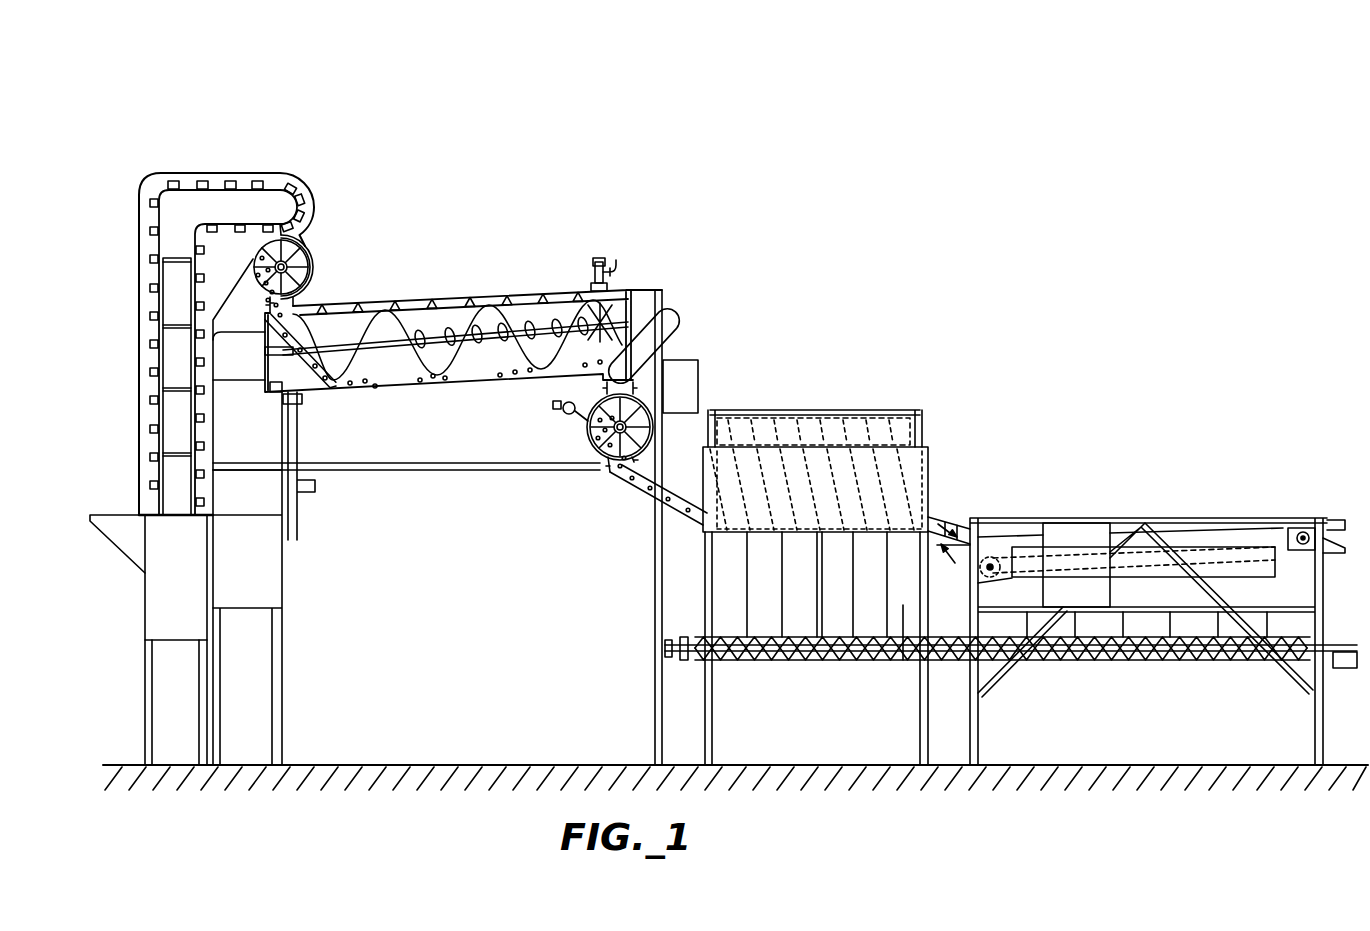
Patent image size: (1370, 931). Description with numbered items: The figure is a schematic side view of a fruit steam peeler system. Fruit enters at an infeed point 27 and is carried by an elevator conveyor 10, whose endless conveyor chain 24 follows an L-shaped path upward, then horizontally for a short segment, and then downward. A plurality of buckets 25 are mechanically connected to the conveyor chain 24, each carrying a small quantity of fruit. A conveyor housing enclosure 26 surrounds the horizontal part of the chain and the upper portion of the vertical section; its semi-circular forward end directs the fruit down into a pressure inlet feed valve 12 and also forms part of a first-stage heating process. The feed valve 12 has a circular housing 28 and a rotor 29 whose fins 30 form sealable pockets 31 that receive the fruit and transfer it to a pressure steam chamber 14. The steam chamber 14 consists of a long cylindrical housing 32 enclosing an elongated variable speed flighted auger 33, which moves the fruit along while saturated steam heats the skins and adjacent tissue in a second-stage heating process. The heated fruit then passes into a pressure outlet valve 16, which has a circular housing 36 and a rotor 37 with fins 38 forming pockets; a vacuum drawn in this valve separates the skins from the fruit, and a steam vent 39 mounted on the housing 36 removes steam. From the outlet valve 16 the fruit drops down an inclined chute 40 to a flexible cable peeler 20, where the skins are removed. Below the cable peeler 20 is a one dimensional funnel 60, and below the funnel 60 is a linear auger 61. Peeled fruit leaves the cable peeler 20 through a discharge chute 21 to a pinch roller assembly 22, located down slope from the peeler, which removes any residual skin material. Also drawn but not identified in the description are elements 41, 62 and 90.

The elevator conveyor 10 is at (180, 120).
The pressure inlet feed valve 12 is at (338, 204).
The pressure steam chamber 14 is at (580, 275).
The pressure outlet valve 16 is at (578, 456).
The flexible cable peeler 20 is at (880, 395).
The discharge chute 21 is at (943, 485).
The pinch roller assembly 22 is at (1212, 500).
The endless conveyor chain 24 is at (147, 309).
The buckets 25 is at (237, 182).
The conveyor housing enclosure 26 is at (305, 190).
The infeed point 27 is at (140, 507).
The circular housing 28 is at (303, 249).
The rotor 29 is at (302, 282).
The fins 30 is at (296, 262).
The sealable pockets 31 is at (252, 252).
The cylindrical housing 32 is at (612, 290).
The flighted auger 33 is at (415, 358).
The circular housing 36 is at (589, 430).
The rotor 37 is at (617, 466).
The fins 38 is at (649, 431).
The steam vent 39 is at (551, 404).
The inclined chute 40 is at (645, 492).
The support post 41 is at (700, 568).
The one dimensional funnel 60 is at (903, 662).
The linear auger 61 is at (791, 663).
The transfer chute 62 is at (946, 515).
The elevator housing 90 is at (140, 183).